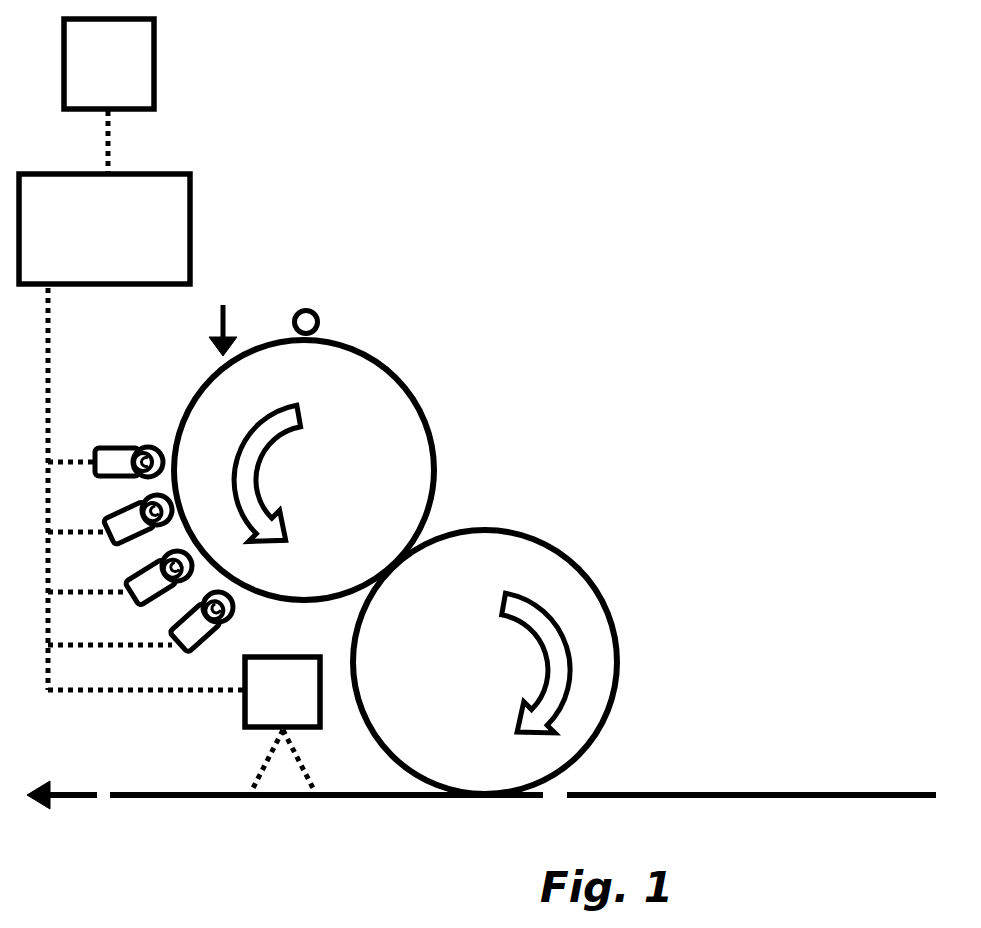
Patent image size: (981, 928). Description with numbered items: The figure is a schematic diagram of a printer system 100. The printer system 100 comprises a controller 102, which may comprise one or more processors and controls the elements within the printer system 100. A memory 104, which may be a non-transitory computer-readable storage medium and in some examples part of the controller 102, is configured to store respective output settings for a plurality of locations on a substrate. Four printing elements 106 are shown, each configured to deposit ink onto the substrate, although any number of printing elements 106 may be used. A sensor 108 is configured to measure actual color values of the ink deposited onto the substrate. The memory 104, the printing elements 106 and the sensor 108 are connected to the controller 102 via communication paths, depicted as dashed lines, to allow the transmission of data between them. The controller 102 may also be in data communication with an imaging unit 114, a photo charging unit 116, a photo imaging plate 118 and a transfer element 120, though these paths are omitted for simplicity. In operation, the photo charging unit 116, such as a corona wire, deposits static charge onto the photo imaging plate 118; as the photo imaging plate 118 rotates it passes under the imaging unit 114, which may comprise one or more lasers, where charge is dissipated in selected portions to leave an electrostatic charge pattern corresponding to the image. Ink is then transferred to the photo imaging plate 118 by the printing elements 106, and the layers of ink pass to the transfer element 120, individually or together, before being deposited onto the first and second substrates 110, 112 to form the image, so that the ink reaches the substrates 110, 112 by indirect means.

The printer system 100 is at (545, 112).
The controller 102 is at (192, 224).
The memory 104 is at (155, 82).
The printing elements 106 is at (120, 446).
The sensor 108 is at (244, 722).
The first substrate 110 is at (134, 792).
The second substrate 112 is at (750, 792).
The imaging unit 114 is at (226, 320).
The photo charging unit 116 is at (320, 322).
The photo imaging plate (PIP) 118 is at (424, 400).
The transfer element 120 is at (537, 537).